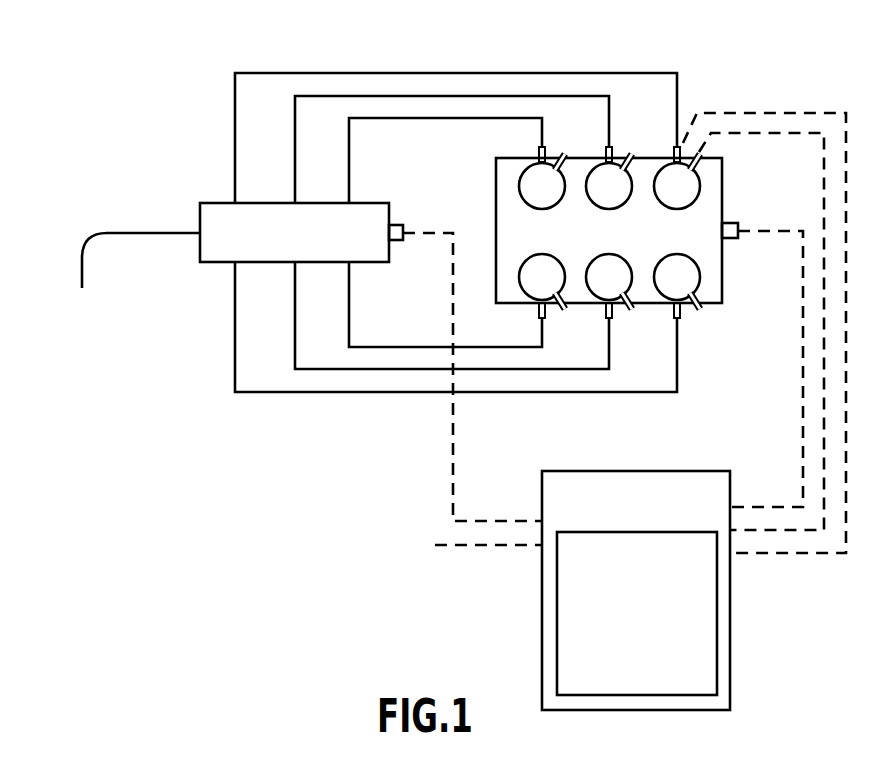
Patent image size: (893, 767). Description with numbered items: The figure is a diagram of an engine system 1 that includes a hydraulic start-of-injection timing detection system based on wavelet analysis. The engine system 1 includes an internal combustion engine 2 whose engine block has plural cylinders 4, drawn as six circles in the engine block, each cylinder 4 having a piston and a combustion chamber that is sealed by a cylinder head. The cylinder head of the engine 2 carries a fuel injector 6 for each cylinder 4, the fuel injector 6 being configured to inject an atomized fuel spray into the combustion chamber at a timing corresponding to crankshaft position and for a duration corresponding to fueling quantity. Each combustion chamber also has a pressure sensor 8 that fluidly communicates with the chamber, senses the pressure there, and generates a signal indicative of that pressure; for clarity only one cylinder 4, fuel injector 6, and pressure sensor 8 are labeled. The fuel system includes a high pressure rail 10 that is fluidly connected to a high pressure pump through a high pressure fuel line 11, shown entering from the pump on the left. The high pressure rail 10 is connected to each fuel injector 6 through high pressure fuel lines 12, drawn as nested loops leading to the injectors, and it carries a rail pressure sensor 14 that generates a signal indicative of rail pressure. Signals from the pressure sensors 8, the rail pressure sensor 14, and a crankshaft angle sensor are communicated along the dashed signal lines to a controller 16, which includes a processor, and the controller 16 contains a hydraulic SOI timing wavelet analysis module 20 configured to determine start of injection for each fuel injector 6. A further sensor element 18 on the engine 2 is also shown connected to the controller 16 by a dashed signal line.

The engine system 1 is at (432, 149).
The internal combustion engine 2 is at (609, 232).
The cylinder 4 is at (698, 194).
The fuel injector 6 is at (675, 147).
The pressure sensor 8 is at (700, 165).
The high pressure rail 10 is at (294, 232).
The high pressure fuel line 11 is at (137, 233).
The high pressure fuel lines 12 is at (279, 73).
The rail pressure sensor 14 is at (396, 225).
The controller 16 is at (526, 590).
The engine sensor 18 is at (733, 238).
The hydraulic SOI timing wavelet analysis module 20 is at (637, 613).